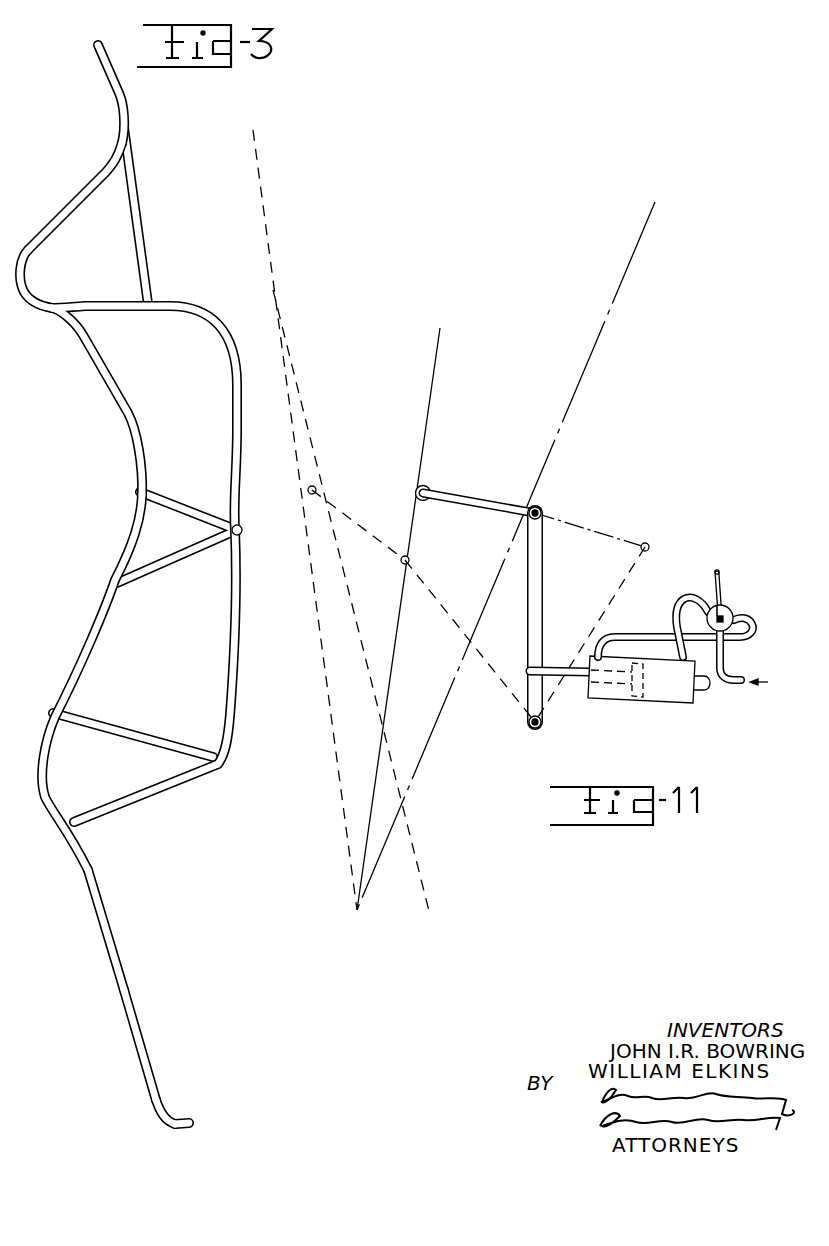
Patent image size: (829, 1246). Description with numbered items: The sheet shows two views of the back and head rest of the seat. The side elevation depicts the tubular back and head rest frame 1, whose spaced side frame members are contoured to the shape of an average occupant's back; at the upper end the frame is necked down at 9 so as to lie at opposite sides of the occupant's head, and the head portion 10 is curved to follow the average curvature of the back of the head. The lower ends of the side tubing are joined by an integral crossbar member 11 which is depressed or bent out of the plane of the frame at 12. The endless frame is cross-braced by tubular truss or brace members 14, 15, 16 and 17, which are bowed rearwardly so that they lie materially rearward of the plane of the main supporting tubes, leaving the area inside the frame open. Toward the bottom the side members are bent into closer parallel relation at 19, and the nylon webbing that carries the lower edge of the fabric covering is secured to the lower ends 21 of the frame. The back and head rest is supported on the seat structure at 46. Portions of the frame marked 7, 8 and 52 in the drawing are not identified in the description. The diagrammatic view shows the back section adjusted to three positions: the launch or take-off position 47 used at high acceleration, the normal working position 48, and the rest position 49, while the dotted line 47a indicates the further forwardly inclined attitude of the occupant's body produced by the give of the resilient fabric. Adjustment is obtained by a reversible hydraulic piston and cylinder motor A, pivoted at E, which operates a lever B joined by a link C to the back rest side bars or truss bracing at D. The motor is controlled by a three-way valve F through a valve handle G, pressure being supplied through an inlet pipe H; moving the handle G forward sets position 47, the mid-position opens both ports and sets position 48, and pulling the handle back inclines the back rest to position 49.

In FIG. 3, the back and head rest frame 1 is at (128, 595).
In FIG. 11, the back and head rest frame 1 is at (351, 520).
In FIG. 3, the upper side portion of frame 7 is at (99, 372).
In FIG. 3, the lower side portion of frame 8 is at (70, 692).
In FIG. 3, the necked-down upper end portion 9 is at (30, 289).
In FIG. 3, the head portion 10 is at (89, 187).
In FIG. 3, the crossbar member 11 is at (172, 1129).
In FIG. 3, the depressed portion of crossbar 12 is at (188, 1117).
In FIG. 3, the tubular truss or brace member 14 is at (230, 622).
In FIG. 3, the tubular truss or brace member 15 is at (177, 503).
In FIG. 3, the tubular truss or brace member 16 is at (232, 438).
In FIG. 3, the tubular truss or brace member 17 is at (134, 241).
In FIG. 3, the closer parallel lower end portion 19 is at (85, 875).
In FIG. 3, the lower end of main frame 21 is at (122, 1001).
In FIG. 3, the support point 46 is at (243, 537).
In FIG. 3, the top end of frame 52 is at (109, 83).
In FIG. 11, the launch position 47 is at (274, 276).
In FIG. 11, the occupant body angle under acceleration 47a is at (358, 626).
In FIG. 11, the normal working position 48 is at (435, 363).
In FIG. 11, the rest position 49 is at (588, 355).
In FIG. 11, the reversible motor A is at (614, 701).
In FIG. 11, the lever B is at (544, 577).
In FIG. 11, the link C is at (472, 497).
In FIG. 11, the connection point on back rest D is at (427, 501).
In FIG. 11, the motor pivot E is at (706, 692).
In FIG. 11, the three-way valve F is at (733, 611).
In FIG. 11, the valve handle G is at (722, 574).
In FIG. 11, the inlet pipe H is at (736, 685).